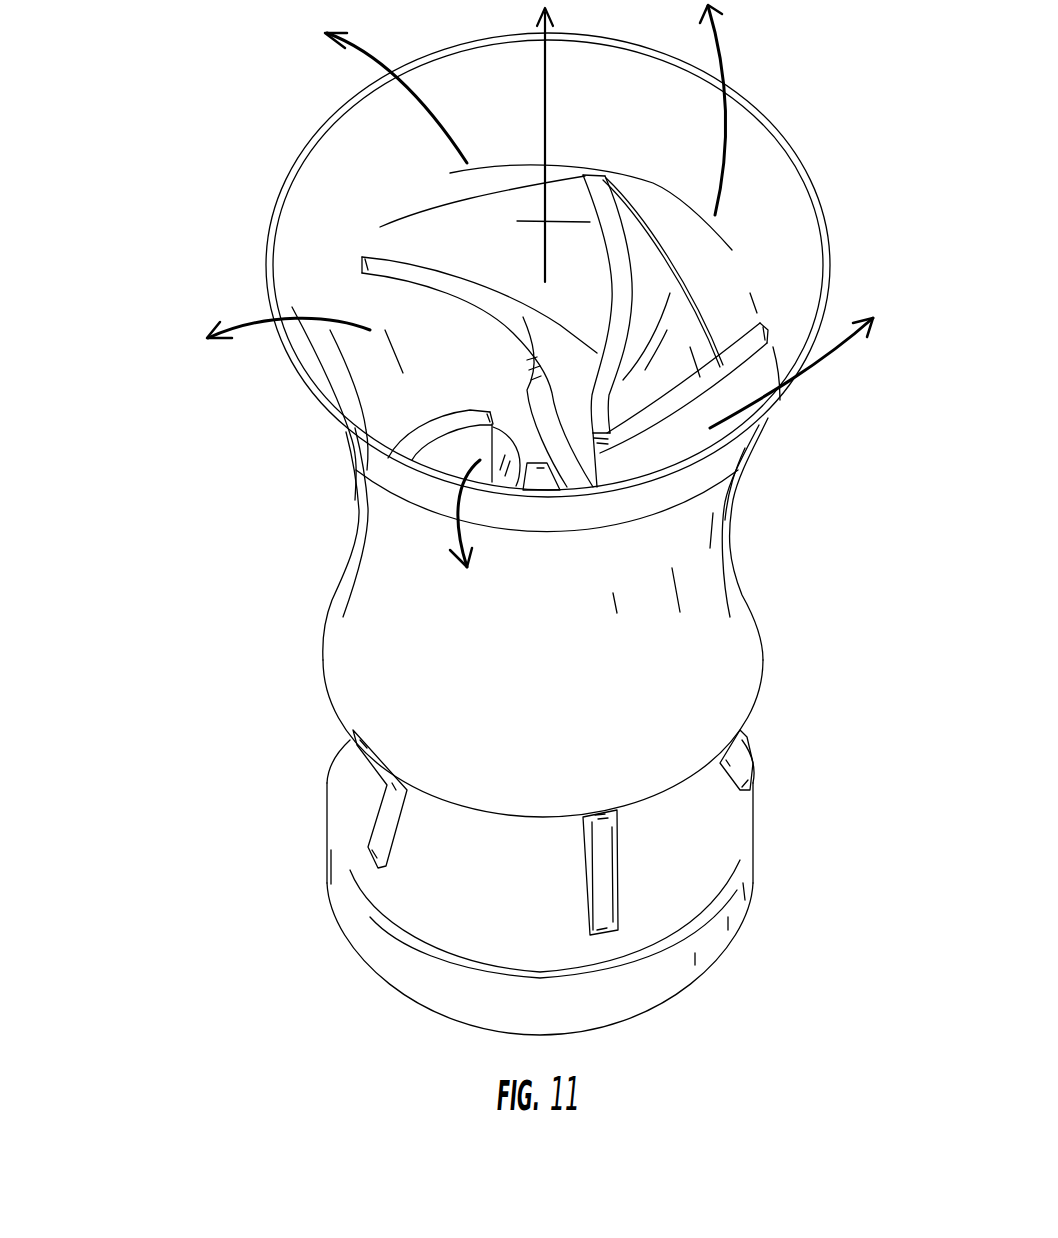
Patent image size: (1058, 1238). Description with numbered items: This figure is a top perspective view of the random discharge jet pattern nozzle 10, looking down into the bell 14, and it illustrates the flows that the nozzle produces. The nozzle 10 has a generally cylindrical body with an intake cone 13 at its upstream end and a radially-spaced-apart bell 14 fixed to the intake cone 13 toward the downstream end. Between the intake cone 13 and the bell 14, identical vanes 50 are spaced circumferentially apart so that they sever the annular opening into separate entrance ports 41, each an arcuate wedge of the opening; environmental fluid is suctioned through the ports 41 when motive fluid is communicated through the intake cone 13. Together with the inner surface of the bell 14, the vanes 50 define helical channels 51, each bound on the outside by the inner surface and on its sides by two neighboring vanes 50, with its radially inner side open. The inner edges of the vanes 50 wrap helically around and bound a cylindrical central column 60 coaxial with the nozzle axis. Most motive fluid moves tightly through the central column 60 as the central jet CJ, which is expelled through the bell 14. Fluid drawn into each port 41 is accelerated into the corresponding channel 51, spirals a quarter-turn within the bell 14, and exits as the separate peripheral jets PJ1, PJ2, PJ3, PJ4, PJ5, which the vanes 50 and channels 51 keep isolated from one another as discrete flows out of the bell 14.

The random discharge jet pattern nozzle 10 is at (477, 534).
The intake cone 13 is at (755, 857).
The bell 14 is at (571, 425).
The entrance ports 41 is at (337, 720).
The vanes 50 is at (381, 824).
The helical channels 51 is at (403, 213).
The central column 60 is at (520, 315).
The central jet CJ is at (545, 82).
The peripheral jet PJ1 is at (453, 533).
The peripheral jet PJ2 is at (825, 362).
The peripheral jet PJ3 is at (725, 57).
The peripheral jet PJ4 is at (377, 53).
The peripheral jet PJ5 is at (250, 317).